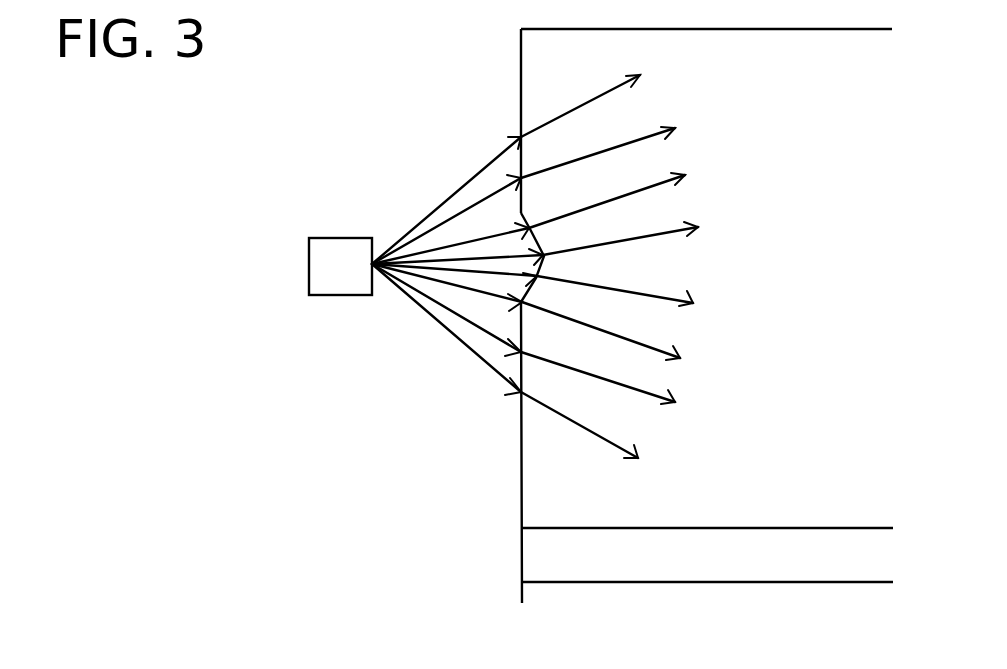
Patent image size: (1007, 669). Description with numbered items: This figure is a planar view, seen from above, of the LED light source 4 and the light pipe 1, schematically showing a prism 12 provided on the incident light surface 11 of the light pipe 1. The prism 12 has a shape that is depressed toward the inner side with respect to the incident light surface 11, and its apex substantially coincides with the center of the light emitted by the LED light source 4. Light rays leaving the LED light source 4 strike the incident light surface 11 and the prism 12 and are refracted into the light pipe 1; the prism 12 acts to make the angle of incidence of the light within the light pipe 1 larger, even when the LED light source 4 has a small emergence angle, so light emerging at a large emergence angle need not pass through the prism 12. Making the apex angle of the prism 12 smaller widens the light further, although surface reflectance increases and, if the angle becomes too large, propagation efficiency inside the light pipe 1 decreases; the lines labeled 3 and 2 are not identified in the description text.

The light pipe 1 is at (545, 55).
The incident light surface 11 is at (521, 100).
The prism 12 is at (548, 258).
The LED light source 4 is at (309, 264).
The intermediate layer 3 is at (538, 550).
The reflective layer 2 is at (540, 602).